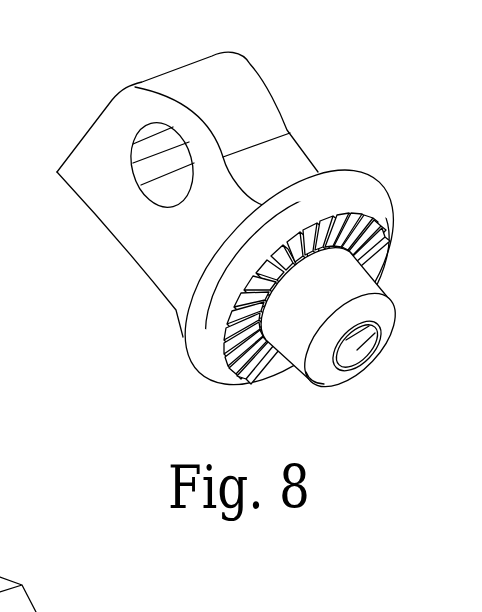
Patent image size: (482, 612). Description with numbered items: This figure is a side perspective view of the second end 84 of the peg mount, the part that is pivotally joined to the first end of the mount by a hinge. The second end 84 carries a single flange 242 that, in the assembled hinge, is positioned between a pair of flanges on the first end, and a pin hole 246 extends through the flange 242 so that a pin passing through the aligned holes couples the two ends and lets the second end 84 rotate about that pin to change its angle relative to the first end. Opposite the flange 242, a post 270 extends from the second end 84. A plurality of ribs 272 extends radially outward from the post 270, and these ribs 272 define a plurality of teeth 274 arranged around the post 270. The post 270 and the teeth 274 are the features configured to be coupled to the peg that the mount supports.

The flange 242 is at (247, 61).
The pin hole 246 is at (157, 167).
The second end 84 is at (288, 134).
The teeth 274 is at (240, 378).
The ribs 272 is at (387, 240).
The post 270 is at (391, 300).